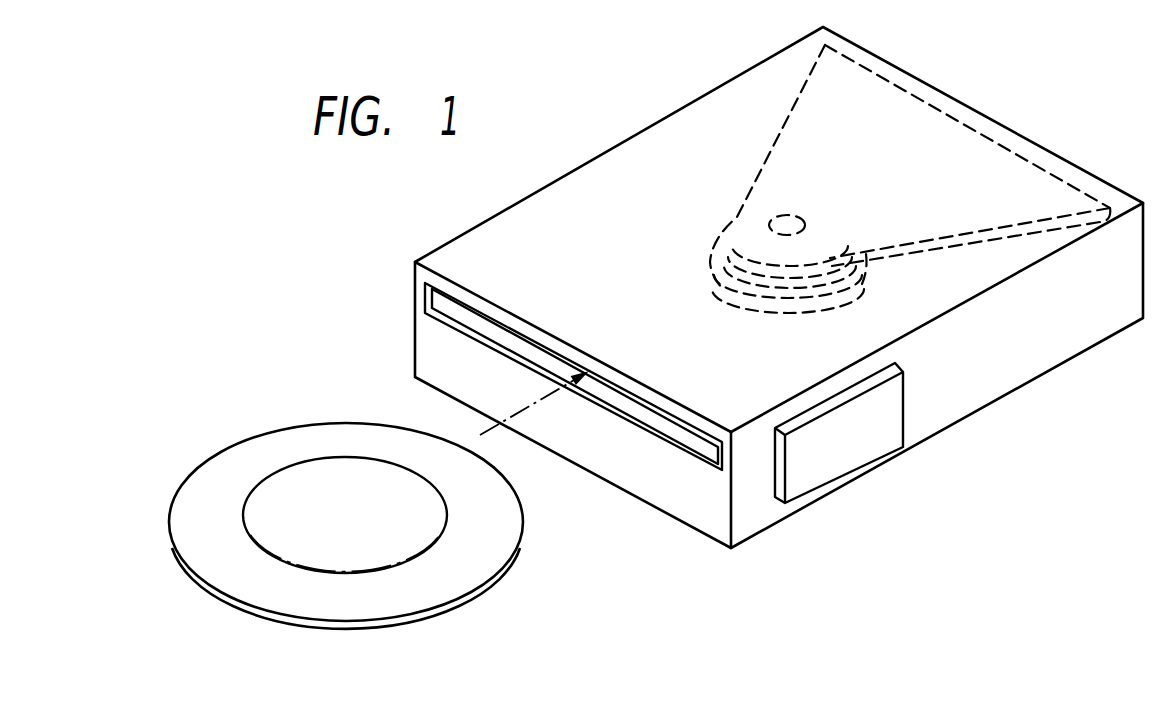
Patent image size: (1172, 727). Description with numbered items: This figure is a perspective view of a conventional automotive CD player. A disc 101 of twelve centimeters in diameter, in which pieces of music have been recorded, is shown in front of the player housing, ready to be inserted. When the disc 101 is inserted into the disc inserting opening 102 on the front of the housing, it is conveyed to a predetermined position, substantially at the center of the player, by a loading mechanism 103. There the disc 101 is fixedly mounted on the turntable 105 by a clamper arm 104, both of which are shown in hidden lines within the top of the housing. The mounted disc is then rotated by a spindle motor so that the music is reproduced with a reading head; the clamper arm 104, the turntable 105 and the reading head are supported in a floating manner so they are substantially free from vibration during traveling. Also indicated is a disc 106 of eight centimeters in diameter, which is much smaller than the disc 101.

The disc 101 is at (498, 560).
The disc inserting opening 102 is at (437, 299).
The loading mechanism 103 is at (853, 458).
The clamper arm 104 is at (798, 120).
The turntable 105 is at (708, 252).
The disc 106 is at (443, 515).